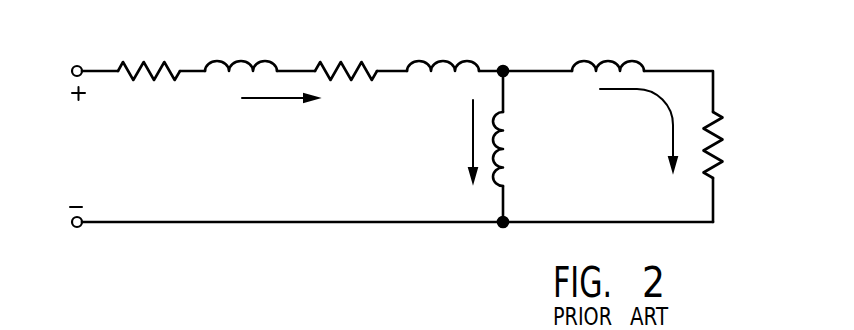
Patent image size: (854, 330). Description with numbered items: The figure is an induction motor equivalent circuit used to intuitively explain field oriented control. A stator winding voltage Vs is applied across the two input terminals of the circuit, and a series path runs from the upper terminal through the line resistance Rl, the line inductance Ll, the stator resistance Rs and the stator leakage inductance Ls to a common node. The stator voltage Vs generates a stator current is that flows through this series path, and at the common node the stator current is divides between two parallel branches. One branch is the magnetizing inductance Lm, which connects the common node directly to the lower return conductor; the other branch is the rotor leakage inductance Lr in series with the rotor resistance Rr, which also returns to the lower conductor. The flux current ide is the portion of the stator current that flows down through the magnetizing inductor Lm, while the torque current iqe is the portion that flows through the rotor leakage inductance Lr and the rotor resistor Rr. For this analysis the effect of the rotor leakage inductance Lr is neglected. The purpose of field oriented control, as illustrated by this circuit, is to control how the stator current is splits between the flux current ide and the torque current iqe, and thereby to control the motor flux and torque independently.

The stator winding voltage Vs is at (76, 146).
The line resistance Rl is at (149, 51).
The line inductance Ll is at (241, 47).
The stator resistance Rs is at (346, 52).
The stator leakage inductance Ls is at (443, 48).
The rotor leakage inductance Lr is at (608, 48).
The rotor resistance Rr is at (731, 145).
The magnetizing inductance Lm is at (522, 149).
The stator current is is at (280, 115).
The flux current ide is at (452, 141).
The torque current iqe is at (638, 130).